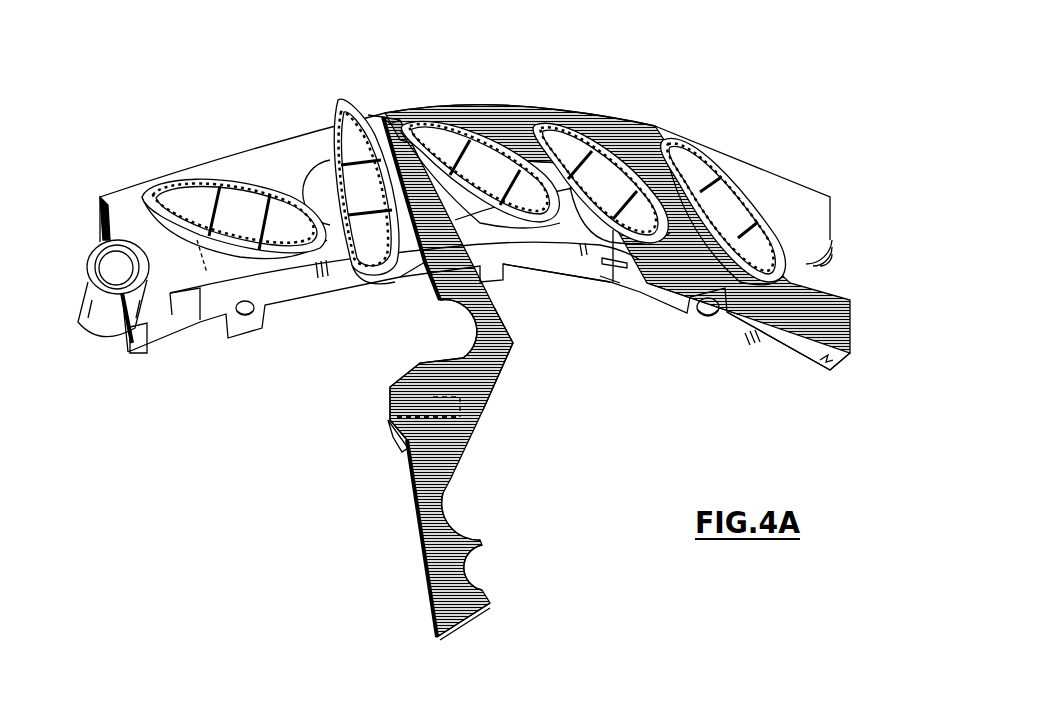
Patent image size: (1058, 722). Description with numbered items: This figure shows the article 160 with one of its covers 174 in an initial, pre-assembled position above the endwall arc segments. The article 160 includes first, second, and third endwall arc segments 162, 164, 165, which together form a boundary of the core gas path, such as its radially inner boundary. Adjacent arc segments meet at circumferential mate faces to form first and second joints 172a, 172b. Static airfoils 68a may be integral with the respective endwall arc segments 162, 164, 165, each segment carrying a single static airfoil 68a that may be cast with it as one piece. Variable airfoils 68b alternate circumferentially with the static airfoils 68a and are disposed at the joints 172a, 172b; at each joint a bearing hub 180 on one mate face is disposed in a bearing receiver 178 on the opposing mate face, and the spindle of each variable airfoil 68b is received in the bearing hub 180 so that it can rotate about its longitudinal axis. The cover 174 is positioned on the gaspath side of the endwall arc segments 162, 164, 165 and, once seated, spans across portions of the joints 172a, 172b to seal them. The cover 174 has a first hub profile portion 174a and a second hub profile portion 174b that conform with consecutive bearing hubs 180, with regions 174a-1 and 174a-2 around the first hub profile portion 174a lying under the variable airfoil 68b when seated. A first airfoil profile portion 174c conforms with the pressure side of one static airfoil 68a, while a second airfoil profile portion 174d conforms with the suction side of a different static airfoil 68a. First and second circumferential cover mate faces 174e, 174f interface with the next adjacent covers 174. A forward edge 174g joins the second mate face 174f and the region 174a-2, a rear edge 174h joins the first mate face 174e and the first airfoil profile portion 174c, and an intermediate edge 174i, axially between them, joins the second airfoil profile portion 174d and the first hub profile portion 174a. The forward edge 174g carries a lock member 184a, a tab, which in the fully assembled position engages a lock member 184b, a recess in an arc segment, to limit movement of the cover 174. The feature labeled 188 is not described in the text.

The article 160 is at (205, 388).
The first endwall arc segment 162 is at (297, 292).
The second endwall arc segment 164 is at (558, 270).
The third endwall arc segment 165 is at (765, 323).
The static airfoil 68a is at (212, 178).
The variable airfoil 68b is at (357, 103).
The first joint 172a is at (410, 277).
The second joint 172b is at (611, 295).
The cover 174 is at (412, 450).
The first hub profile portion 174a is at (420, 360).
The region around first hub profile portion 174a-1 is at (496, 328).
The region around first hub profile portion 174a-2 is at (433, 397).
The second hub profile portion 174b is at (481, 589).
The first airfoil profile portion 174c is at (444, 493).
The second airfoil profile portion 174d is at (381, 128).
The first circumferential cover mate face 174e is at (370, 117).
The second circumferential cover mate face 174f is at (468, 625).
The forward edge 174g is at (423, 567).
The rear edge 174h is at (517, 130).
The intermediate edge 174i is at (425, 320).
The bearing receiver 178 is at (828, 262).
The bearing hub 180 is at (95, 318).
The lock member 184a is at (390, 440).
The lock member 184b is at (657, 284).
The hole 188 is at (237, 327).